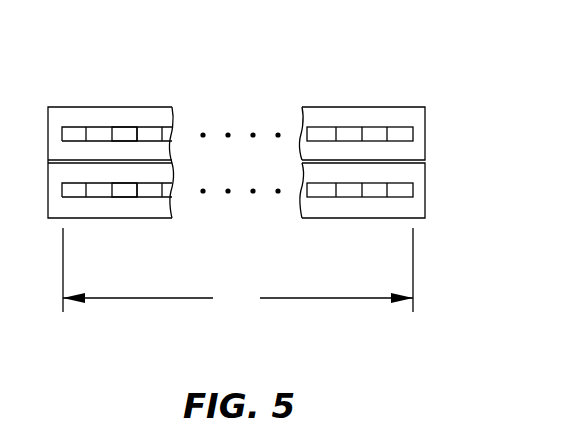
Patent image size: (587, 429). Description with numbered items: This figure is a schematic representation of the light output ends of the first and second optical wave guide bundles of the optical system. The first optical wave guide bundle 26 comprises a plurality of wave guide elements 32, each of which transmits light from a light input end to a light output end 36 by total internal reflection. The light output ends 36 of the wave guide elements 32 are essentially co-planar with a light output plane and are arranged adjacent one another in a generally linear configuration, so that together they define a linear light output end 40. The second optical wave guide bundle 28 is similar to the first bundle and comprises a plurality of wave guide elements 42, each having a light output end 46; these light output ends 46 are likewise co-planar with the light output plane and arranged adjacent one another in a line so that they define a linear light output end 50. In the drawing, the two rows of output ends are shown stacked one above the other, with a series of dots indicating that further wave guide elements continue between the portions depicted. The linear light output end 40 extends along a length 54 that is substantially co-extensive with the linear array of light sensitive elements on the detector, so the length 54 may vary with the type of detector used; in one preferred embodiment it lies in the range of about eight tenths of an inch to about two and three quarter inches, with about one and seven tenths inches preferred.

The first optical wave guide bundle 26 is at (354, 102).
The second optical wave guide bundle 28 is at (356, 223).
The wave guide element 32 is at (127, 116).
The light output end 36 is at (98, 127).
The linear light output end 40 is at (427, 133).
The wave guide element 42 is at (125, 207).
The light output end 46 is at (100, 198).
The linear light output end 50 is at (427, 188).
The length 54 is at (238, 270).